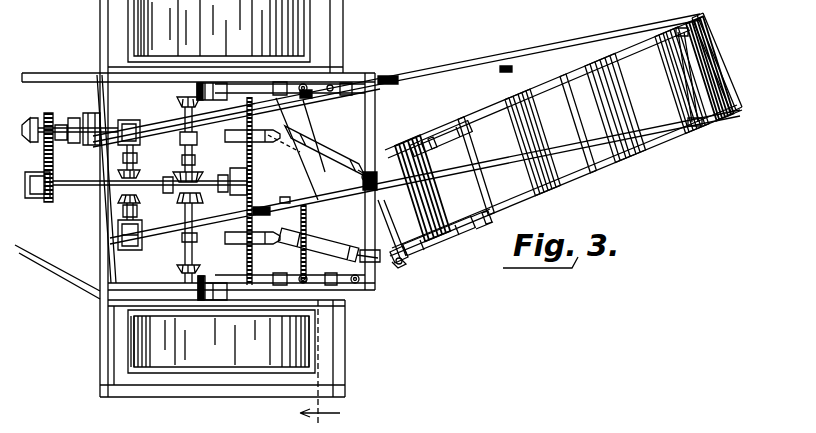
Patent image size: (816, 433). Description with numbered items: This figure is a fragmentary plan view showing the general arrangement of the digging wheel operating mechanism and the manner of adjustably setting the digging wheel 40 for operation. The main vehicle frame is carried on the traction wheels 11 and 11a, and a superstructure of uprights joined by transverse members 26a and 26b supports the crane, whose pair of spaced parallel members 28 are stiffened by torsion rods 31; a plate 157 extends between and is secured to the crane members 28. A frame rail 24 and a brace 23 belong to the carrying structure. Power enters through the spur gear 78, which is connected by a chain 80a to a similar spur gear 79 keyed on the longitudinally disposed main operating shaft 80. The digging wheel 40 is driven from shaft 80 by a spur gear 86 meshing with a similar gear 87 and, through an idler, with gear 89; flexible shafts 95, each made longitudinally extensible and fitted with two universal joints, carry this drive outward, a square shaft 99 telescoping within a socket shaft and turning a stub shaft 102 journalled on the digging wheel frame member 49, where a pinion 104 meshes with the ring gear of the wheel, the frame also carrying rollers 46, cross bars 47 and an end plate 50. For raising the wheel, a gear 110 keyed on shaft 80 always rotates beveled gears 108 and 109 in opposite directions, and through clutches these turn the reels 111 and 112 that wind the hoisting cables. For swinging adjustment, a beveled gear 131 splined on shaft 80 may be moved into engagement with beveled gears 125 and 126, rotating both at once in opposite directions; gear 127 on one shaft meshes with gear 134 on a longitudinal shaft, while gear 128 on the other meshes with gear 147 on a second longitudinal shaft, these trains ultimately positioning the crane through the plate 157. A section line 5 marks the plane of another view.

The traction wheel 11 is at (219, 31).
The traction wheel 11a is at (221, 341).
The frame rail 24 is at (38, 73).
The transverse member 26a is at (100, 100).
The transverse member 26b is at (380, 107).
The spur gear 78 is at (47, 115).
The chain 80a is at (44, 162).
The spur gear 79 is at (45, 198).
The main operating shaft 80 is at (68, 190).
The gear 110 is at (105, 208).
The diagonal brace 23 is at (48, 283).
The gear 147 is at (200, 83).
The beveled gear 128 is at (178, 98).
The reel 112 is at (130, 121).
The beveled gear 131 is at (183, 157).
The beveled gear 109 is at (140, 174).
The beveled gear 126 is at (200, 173).
The beveled gear 125 is at (200, 198).
The beveled gear 108 is at (137, 203).
The reel 111 is at (134, 250).
The beveled gear 127 is at (182, 270).
The gear 134 is at (200, 300).
The spur gear 86 is at (253, 190).
The plate 157 is at (313, 125).
The spur gear 89 is at (288, 142).
The spur gear 87 is at (270, 247).
The flexible shaft 95 is at (331, 163).
The section line 5 is at (325, 362).
The digging wheel frame member 49 is at (500, 112).
The torsion rod 31 is at (469, 68).
The crane member 28 is at (558, 48).
The conveyor roller 46 is at (564, 128).
The cross bar 47 is at (461, 130).
The stub shaft 102 is at (423, 143).
The spur gear 104 is at (430, 136).
The end plate 50 is at (718, 60).
The digging wheel 40 is at (706, 114).
The square shaft 99 is at (390, 267).